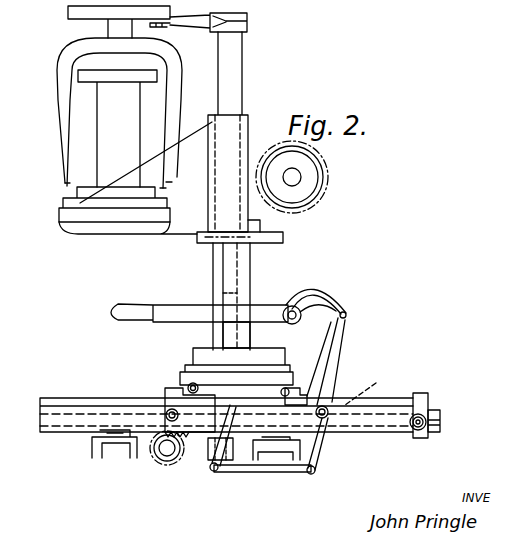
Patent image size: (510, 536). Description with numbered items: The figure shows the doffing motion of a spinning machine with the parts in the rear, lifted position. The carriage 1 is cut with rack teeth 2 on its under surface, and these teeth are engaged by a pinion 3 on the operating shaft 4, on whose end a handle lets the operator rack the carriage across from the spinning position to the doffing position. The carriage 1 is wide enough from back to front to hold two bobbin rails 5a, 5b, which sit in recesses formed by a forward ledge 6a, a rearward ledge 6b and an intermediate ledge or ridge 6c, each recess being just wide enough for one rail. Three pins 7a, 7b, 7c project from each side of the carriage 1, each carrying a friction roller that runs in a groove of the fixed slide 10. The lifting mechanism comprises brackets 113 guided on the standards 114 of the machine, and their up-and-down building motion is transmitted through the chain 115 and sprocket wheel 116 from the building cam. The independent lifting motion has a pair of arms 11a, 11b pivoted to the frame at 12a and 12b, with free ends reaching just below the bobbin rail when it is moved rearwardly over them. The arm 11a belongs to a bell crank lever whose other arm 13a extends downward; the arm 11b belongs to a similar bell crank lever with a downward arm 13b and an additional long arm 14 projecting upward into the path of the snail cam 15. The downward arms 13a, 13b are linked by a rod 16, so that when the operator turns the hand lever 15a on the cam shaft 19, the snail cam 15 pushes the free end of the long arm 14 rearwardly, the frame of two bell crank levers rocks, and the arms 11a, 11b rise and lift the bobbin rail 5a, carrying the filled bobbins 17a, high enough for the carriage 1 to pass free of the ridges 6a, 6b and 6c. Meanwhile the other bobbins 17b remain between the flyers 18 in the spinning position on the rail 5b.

The carriage 1 is at (387, 423).
The rack teeth 2 is at (420, 440).
The pinion 3 is at (160, 460).
The operating shaft 4 is at (167, 458).
The bobbin rail 5a is at (277, 380).
The bobbin rail 5b is at (173, 211).
The forward ledge 6a is at (167, 390).
The rearward ledge 6b is at (425, 392).
The intermediate ledge 6c is at (293, 390).
The pin 7a is at (166, 412).
The pin 7b is at (323, 420).
The pin 7c is at (415, 430).
The fixed slide 10 is at (438, 423).
The arm 11a is at (199, 383).
The arm 11b is at (307, 395).
The pivot 12a is at (232, 357).
The pivot 12b is at (376, 386).
The downwardly extending arm 13a is at (212, 450).
The downwardly extending arm 13b is at (305, 473).
The long arm 14 is at (340, 345).
The snail cam 15 is at (317, 288).
The hand lever 15a is at (106, 312).
The rod 16 is at (267, 473).
The bobbins 17a is at (223, 293).
The bobbins 17b is at (125, 130).
The flyers 18 is at (168, 157).
The cam shaft 19 is at (285, 308).
The brackets 113 is at (105, 234).
The standards 114 is at (232, 58).
The chain 115 is at (258, 210).
The sprocket wheel 116 is at (330, 173).